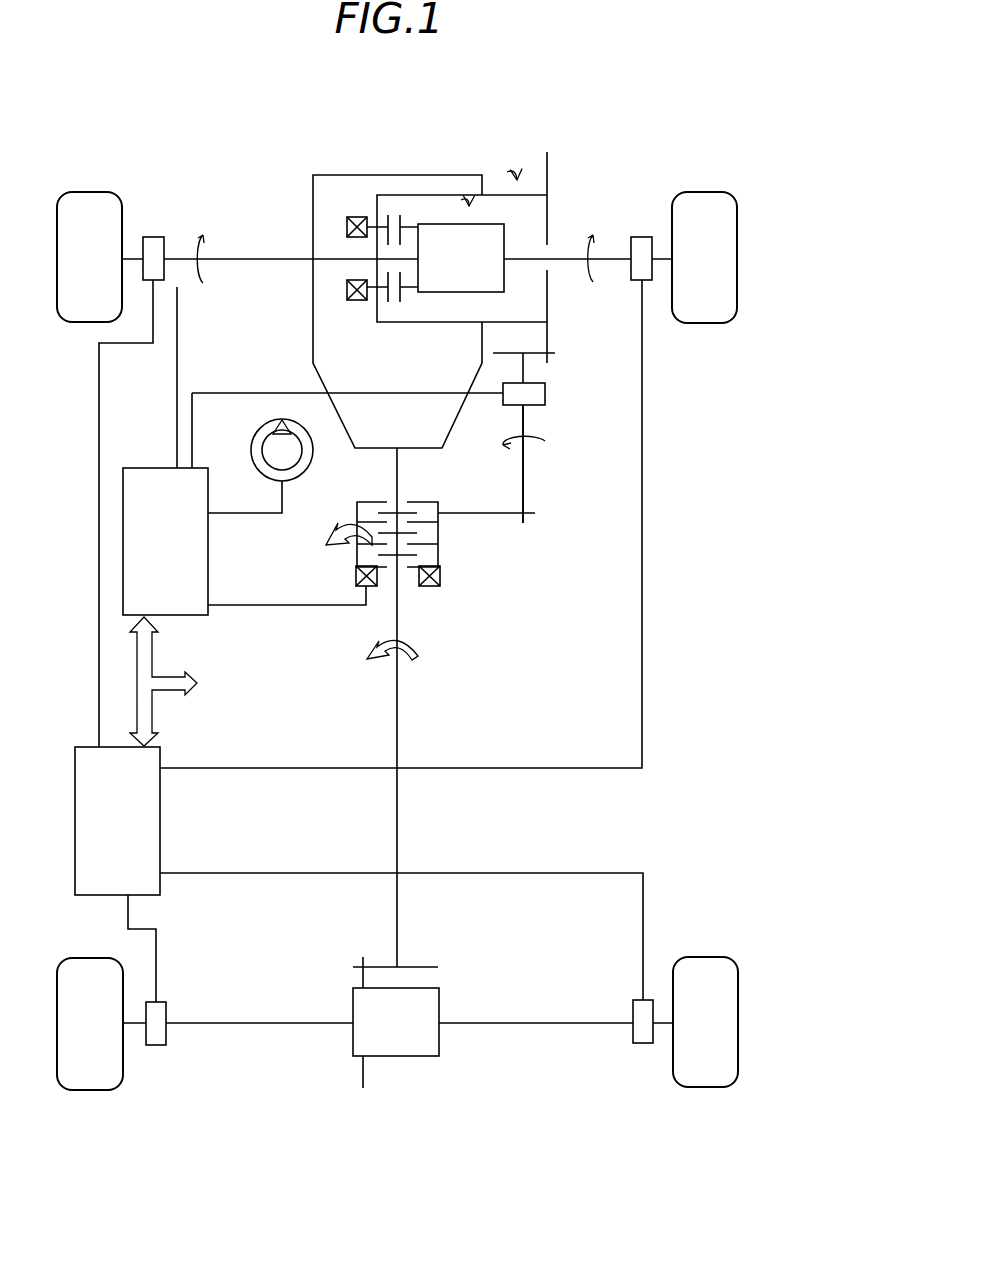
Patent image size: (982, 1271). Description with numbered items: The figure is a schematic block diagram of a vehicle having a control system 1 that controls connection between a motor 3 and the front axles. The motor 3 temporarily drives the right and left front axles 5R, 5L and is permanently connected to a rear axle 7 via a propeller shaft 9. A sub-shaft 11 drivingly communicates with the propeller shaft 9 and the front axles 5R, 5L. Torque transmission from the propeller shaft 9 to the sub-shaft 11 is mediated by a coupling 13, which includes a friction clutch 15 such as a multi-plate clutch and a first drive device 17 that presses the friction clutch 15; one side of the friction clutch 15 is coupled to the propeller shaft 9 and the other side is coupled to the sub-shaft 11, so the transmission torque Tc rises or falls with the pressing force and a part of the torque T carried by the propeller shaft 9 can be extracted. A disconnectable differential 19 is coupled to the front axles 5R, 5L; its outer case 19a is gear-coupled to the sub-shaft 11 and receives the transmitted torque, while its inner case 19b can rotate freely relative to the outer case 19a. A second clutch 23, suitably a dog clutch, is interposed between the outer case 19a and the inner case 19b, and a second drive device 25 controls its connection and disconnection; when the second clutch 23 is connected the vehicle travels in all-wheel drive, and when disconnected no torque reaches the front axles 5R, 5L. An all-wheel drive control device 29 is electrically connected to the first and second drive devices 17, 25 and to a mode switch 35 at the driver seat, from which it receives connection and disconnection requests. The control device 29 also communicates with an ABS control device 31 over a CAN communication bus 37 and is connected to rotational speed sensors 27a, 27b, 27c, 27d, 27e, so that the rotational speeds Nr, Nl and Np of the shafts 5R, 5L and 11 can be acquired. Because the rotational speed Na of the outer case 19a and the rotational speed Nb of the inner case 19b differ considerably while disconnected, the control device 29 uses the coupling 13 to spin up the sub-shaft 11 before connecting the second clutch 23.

The control system 1 is at (663, 540).
The motor 3 is at (340, 175).
The left front axle 5L is at (183, 250).
The right front axle 5R is at (618, 250).
The rear axle 7 is at (530, 1020).
The propeller shaft 9 is at (397, 690).
The sub-shaft 11 is at (523, 481).
The coupling 13 is at (452, 507).
The friction clutch 15 is at (420, 497).
The first drive device 17 is at (440, 575).
The disconnectable differential 19 is at (533, 150).
The outer case 19a is at (380, 195).
The inner case 19b is at (420, 224).
The second clutch 23 is at (398, 308).
The second drive device 25 is at (355, 300).
The rotational speed sensor 27a is at (643, 237).
The rotational speed sensor 27b is at (152, 237).
The rotational speed sensor 27c is at (545, 393).
The rotational speed sensor 27d is at (643, 1045).
The rotational speed sensor 27e is at (160, 1047).
The all-wheel drive control device 29 is at (150, 468).
The ABS control device 31 is at (160, 827).
The mode switch 35 is at (312, 458).
The CAN communication bus 37 is at (163, 677).
The rotational speed of outer case Na is at (504, 205).
The rotational speed of inner case Nb is at (458, 224).
The rotational speed of left front axle Nl is at (203, 233).
The rotational speed of right front axle Nr is at (588, 238).
The rotational speed of sub-shaft Np is at (540, 433).
The torque T is at (415, 645).
The transmission torque Tc is at (337, 548).